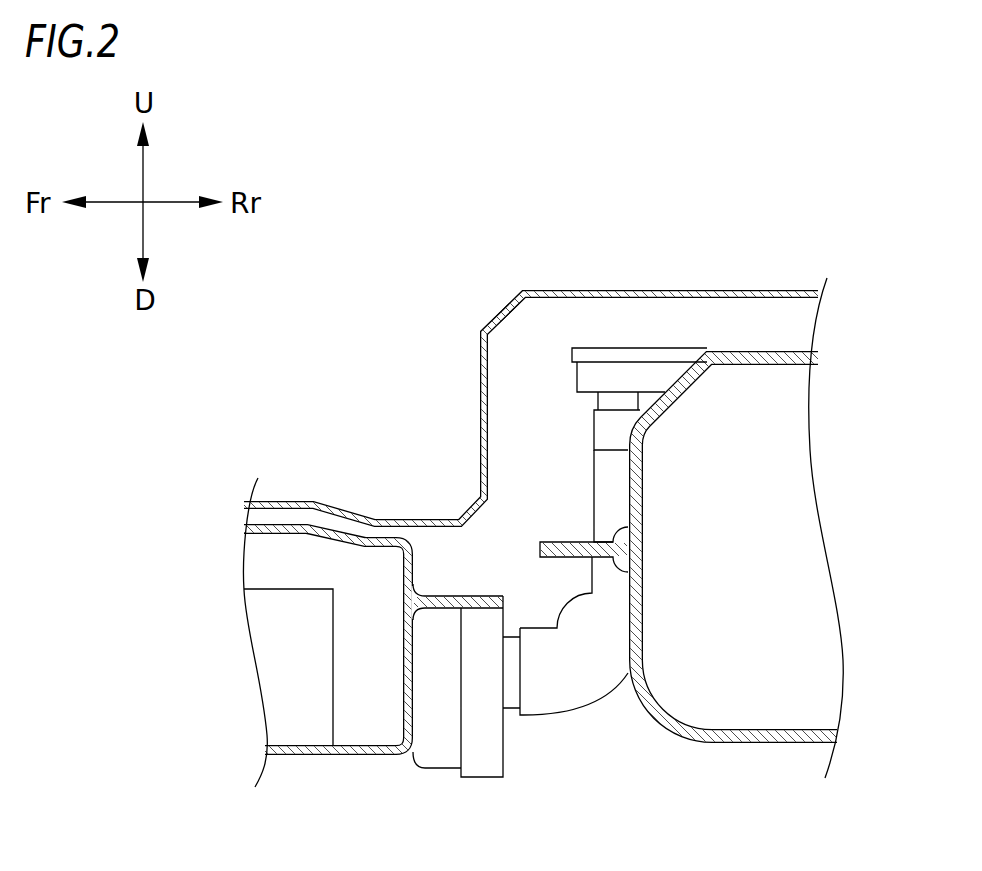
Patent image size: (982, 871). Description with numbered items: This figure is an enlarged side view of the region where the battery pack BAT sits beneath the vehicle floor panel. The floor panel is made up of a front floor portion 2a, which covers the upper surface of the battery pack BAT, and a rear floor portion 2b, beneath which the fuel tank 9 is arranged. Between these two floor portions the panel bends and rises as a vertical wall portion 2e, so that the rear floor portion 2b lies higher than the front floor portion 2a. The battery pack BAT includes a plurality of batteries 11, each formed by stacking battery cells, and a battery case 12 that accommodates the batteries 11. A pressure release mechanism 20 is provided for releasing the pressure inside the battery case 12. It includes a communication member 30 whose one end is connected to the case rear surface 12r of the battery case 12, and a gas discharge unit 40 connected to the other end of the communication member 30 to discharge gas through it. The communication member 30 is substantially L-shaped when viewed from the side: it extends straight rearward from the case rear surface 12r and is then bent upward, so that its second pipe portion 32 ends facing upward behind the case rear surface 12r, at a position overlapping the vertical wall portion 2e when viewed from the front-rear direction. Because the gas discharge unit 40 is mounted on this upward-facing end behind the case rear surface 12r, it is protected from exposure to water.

The front floor portion 2a is at (282, 500).
The rear floor portion 2b is at (762, 290).
The vertical wall portion 2e is at (492, 396).
The pressure release mechanism 20 is at (526, 318).
The gas discharge unit 40 is at (633, 372).
The fuel tank 9 is at (773, 745).
The second pipe portion 32 is at (621, 491).
The communication member 30 is at (585, 687).
The battery 11 is at (291, 715).
The battery case 12 is at (350, 755).
The case rear surface 12r is at (503, 737).
The battery pack BAT is at (365, 520).